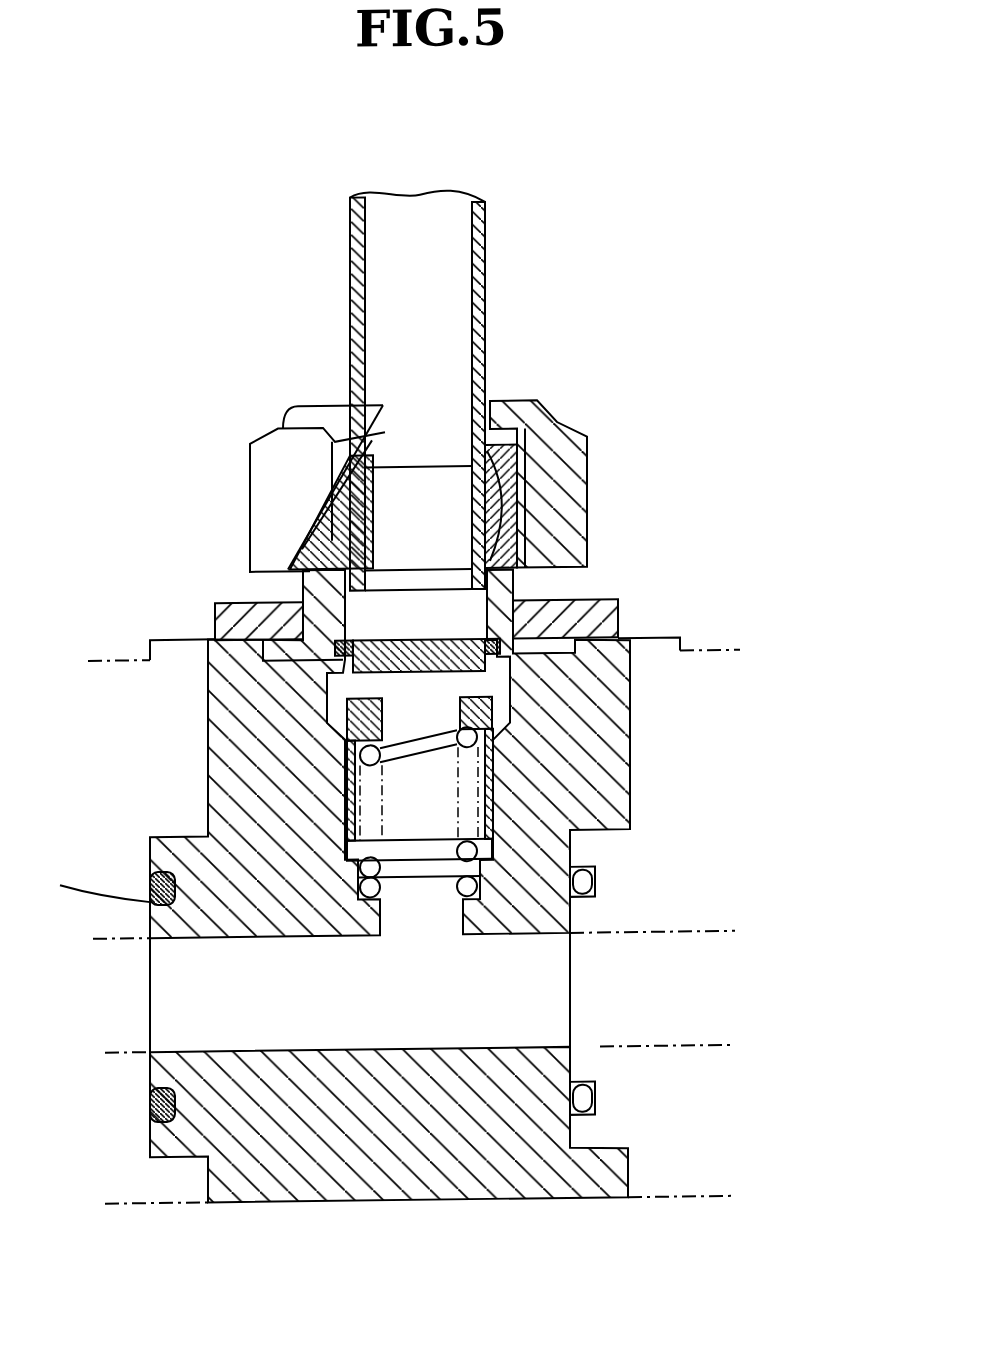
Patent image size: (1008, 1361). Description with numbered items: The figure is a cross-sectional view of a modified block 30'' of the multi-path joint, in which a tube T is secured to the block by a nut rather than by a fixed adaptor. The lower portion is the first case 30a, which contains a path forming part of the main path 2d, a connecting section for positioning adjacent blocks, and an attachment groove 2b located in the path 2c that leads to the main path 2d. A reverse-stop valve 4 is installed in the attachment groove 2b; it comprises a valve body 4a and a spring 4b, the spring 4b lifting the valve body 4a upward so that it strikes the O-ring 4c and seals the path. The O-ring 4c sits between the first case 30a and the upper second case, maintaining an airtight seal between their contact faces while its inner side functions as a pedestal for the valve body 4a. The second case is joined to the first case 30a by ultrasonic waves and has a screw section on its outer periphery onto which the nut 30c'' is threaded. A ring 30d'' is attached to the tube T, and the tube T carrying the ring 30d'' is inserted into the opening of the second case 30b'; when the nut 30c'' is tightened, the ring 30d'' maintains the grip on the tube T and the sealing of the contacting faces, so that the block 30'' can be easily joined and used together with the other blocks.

The tube T is at (488, 278).
The block 30'' is at (503, 436).
The nut 30c'' is at (446, 443).
The ring 30d'' is at (403, 437).
The second case 30b' is at (658, 594).
The first case 30a is at (448, 1173).
The reverse-stop valve 4 is at (350, 799).
The valve body 4a is at (437, 639).
The spring 4b is at (483, 848).
The O-ring 4c is at (300, 626).
The attachment groove 2b is at (497, 774).
The path 2c is at (387, 918).
The main path 2d is at (548, 990).